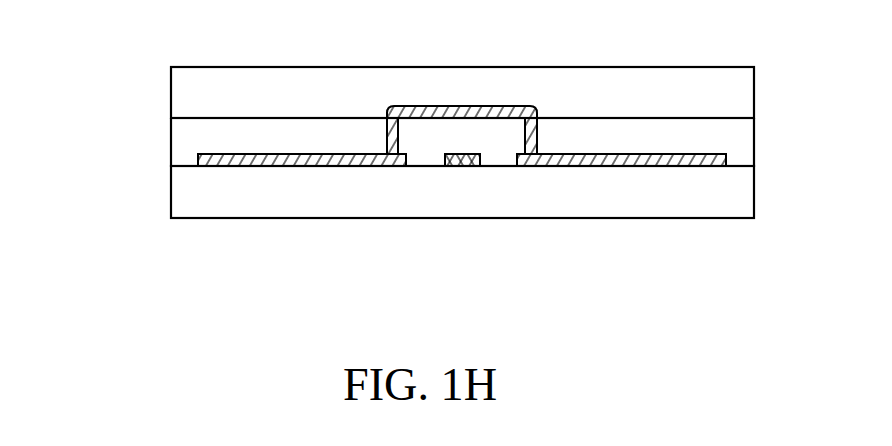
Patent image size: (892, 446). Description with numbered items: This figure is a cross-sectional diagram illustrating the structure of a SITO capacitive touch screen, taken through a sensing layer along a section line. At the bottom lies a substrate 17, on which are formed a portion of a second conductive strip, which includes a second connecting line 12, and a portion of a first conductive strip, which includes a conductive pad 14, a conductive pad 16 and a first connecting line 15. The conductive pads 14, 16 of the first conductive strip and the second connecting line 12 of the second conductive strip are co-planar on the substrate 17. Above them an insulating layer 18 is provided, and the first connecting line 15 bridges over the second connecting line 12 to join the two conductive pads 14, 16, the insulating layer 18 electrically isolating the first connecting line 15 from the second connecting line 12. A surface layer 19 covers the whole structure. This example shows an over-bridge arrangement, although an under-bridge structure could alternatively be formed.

The second connecting line 12 is at (480, 165).
The conductive pad 14 is at (277, 162).
The first connecting line 15 is at (488, 108).
The conductive pad 16 is at (638, 162).
The substrate 17 is at (183, 203).
The insulating layer 18 is at (183, 156).
The surface layer 19 is at (182, 90).